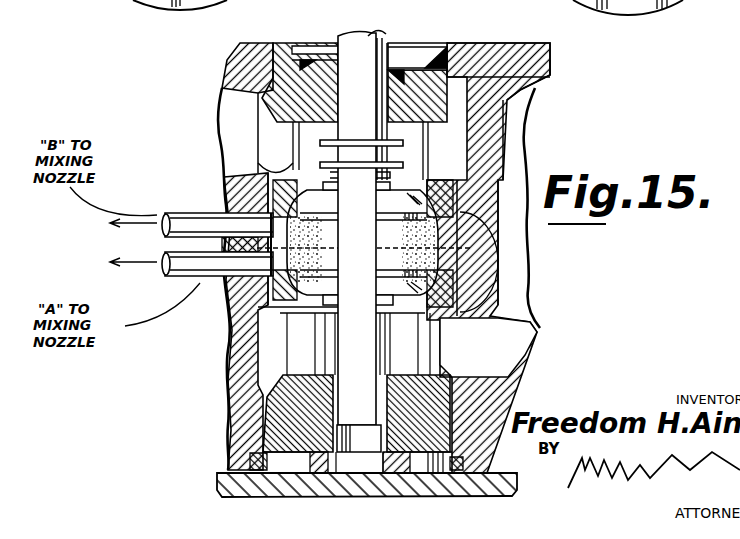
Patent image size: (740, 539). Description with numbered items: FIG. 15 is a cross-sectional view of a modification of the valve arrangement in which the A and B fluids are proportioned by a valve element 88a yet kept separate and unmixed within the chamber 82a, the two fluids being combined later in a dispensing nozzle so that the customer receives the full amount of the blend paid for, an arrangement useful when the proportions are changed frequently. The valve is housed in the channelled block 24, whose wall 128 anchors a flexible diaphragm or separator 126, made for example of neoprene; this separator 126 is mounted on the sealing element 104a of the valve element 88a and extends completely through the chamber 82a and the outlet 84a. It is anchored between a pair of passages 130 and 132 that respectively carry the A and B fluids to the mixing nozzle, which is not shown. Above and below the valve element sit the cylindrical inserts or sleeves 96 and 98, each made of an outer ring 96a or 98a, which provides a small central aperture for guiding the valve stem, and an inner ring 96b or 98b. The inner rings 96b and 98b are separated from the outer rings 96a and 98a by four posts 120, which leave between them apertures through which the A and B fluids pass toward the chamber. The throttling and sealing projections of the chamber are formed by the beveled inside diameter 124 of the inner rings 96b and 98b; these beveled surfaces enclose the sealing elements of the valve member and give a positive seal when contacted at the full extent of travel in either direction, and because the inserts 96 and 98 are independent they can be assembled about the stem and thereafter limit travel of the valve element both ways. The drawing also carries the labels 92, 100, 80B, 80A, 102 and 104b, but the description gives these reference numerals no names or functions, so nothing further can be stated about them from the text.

The channelled block 24 is at (535, 44).
The valve stem 92 is at (386, 34).
The cylindrical insert 96 is at (453, 30).
The outer ring 96a is at (548, 74).
The inner ring 96b is at (492, 192).
The posts 120 is at (258, 90).
The upper chamber 80B is at (268, 143).
The bore 100 is at (258, 146).
The passage 132 is at (178, 213).
The passage 130 is at (167, 272).
The beveled inside diameter 124 is at (208, 305).
The inner ring 98b is at (257, 325).
The outer ring 98a is at (280, 427).
The cylindrical insert 98 is at (429, 392).
The sealing element 104a is at (362, 242).
The valve disc lower 104b is at (363, 271).
The valve bottom collar 102 is at (448, 308).
The wall 128 is at (482, 168).
The flexible diaphragm 126 is at (470, 249).
The valve element 88a is at (456, 263).
The chamber 82a is at (501, 280).
The outlet 84a is at (462, 297).
The valve body 80A is at (470, 352).